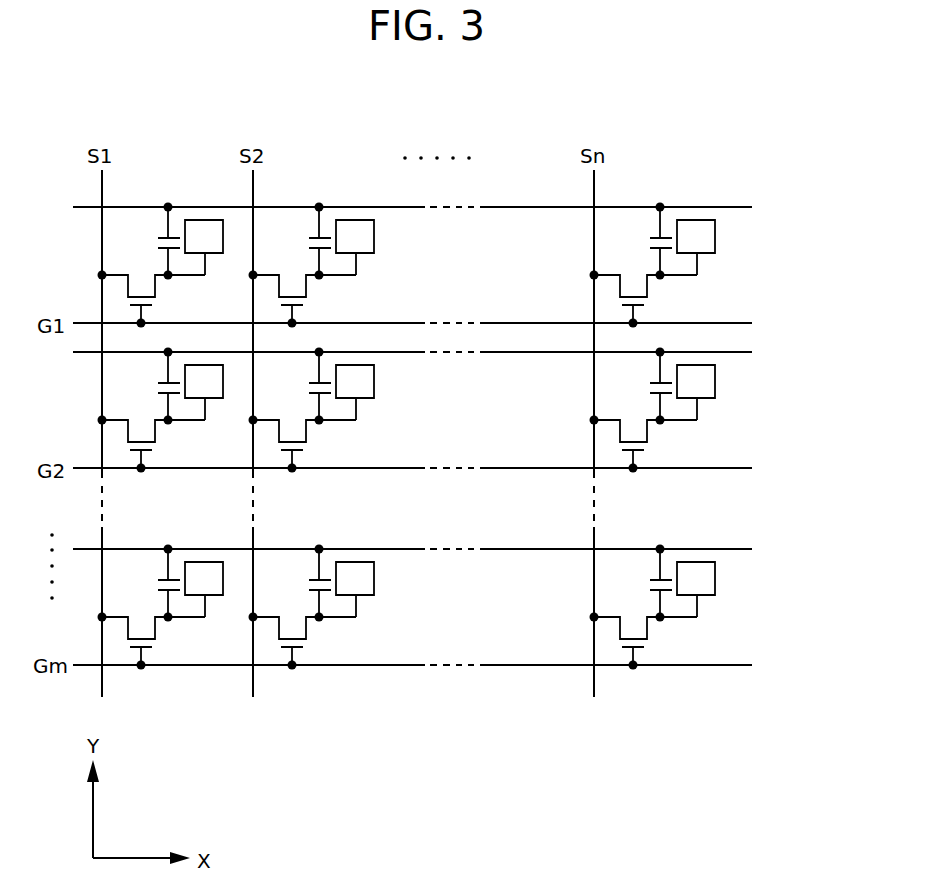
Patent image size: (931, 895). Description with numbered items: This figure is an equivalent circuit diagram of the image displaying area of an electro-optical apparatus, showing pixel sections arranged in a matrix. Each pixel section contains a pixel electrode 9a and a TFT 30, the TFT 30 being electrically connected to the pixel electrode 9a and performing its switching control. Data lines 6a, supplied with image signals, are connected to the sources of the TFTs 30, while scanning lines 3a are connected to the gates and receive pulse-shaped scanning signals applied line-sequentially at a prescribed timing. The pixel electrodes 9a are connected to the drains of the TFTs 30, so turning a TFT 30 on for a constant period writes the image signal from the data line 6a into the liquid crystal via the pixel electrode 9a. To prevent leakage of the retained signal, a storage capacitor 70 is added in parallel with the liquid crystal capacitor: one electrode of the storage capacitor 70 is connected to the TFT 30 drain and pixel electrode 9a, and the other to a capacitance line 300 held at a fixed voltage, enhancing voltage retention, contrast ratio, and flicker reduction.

The data line 6a is at (639, 167).
The scanning line 3a is at (803, 665).
The capacitance line 300 is at (778, 570).
The storage capacitor 70 is at (157, 247).
The TFT 30 is at (120, 288).
The pixel electrode 9a is at (743, 610).